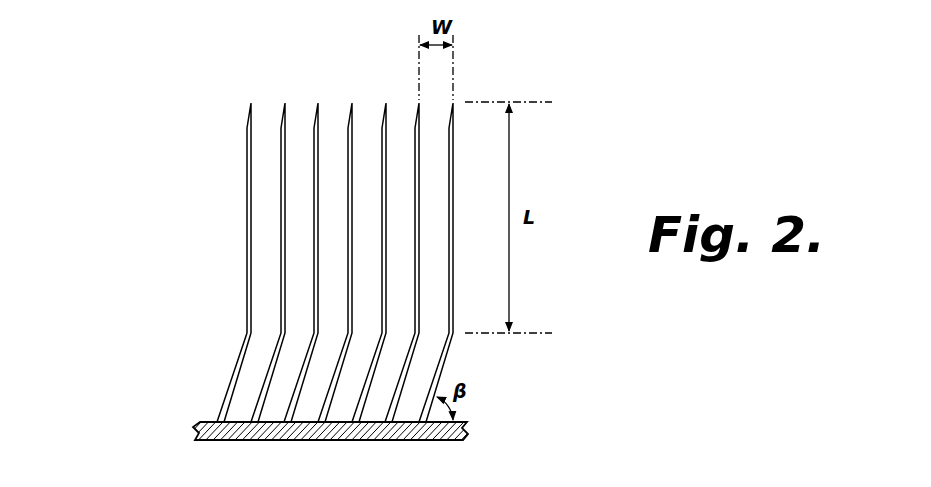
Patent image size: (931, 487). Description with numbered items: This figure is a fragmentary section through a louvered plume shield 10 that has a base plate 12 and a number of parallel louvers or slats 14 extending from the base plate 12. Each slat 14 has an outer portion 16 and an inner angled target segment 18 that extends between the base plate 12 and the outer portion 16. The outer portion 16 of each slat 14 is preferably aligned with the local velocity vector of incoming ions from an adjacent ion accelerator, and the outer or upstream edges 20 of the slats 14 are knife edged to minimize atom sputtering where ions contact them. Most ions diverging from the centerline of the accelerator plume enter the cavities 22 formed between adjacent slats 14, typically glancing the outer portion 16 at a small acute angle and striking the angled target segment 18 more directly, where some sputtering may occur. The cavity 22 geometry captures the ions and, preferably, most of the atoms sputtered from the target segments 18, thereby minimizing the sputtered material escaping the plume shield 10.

The louvered plume shield 10 is at (193, 104).
The base plate 12 is at (196, 429).
The slats 14 is at (283, 114).
The outer portion 16 is at (248, 172).
The target segment 18 is at (234, 371).
The upstream edges 20 is at (320, 114).
The cavities 22 is at (402, 118).